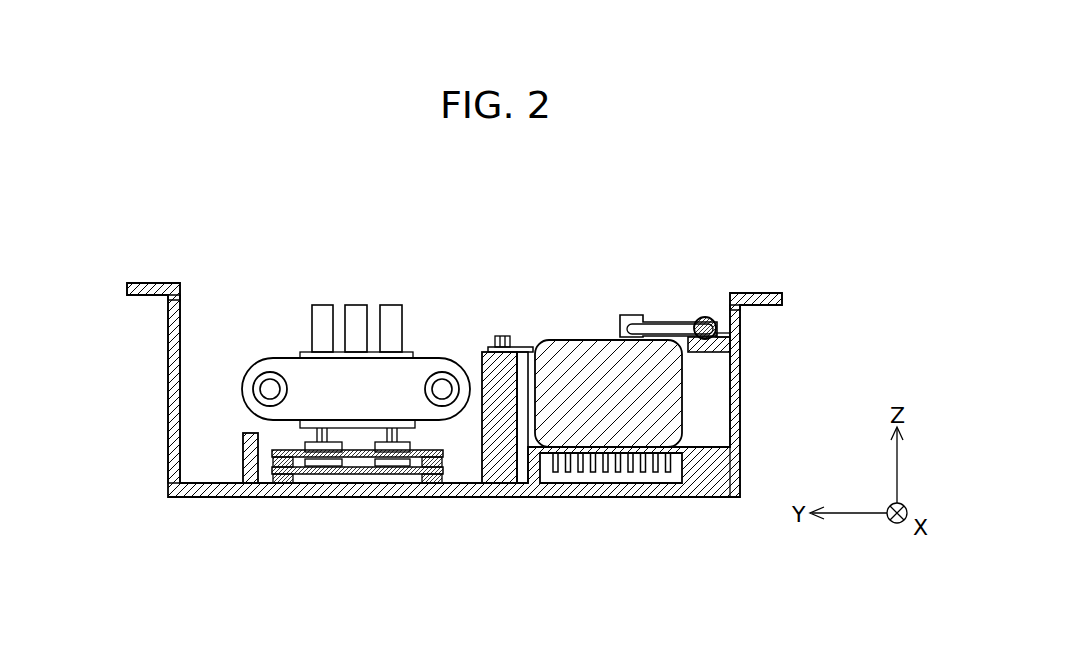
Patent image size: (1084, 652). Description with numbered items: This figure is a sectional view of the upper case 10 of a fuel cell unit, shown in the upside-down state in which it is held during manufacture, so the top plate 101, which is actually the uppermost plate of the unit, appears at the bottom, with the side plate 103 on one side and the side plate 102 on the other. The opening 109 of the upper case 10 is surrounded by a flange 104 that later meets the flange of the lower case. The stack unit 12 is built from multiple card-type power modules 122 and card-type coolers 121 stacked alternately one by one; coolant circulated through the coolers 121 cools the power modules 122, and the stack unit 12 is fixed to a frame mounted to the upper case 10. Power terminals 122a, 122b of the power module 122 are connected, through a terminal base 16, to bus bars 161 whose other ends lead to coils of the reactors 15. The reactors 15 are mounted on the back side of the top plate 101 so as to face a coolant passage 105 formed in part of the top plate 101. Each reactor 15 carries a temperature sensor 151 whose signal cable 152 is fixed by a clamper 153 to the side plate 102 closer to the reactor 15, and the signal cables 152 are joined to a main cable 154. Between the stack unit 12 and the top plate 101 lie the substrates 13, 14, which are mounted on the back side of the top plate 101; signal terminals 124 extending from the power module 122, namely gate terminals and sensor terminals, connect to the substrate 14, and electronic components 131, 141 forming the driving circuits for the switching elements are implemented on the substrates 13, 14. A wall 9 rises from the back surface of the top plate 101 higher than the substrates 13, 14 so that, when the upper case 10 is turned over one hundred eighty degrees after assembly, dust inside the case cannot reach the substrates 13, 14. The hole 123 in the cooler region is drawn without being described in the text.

The upper case 10 is at (122, 266).
The wall 9 is at (241, 433).
The stack unit 12 is at (296, 317).
The substrate 13 is at (482, 453).
The substrate 14 is at (480, 483).
The reactor 15 is at (570, 341).
The terminal base 16 is at (480, 351).
The top plate 101 is at (197, 478).
The side plate 102 is at (742, 394).
The side plate 103 is at (168, 345).
The flange 104 is at (768, 293).
The coolant passage 105 is at (670, 470).
The opening 109 is at (186, 298).
The cooler 121 is at (252, 365).
The power module 122 is at (327, 350).
The power terminal 122a is at (391, 304).
The power terminal 122b is at (360, 304).
The mounting hole 123 is at (264, 372).
The signal terminal 124 is at (407, 443).
The electronic component 131 is at (316, 467).
The electronic component 141 is at (317, 440).
The temperature sensor 151 is at (630, 314).
The signal cable 152 is at (670, 323).
The clamper 153 is at (718, 337).
The main cable 154 is at (707, 317).
The bus bar 161 is at (520, 347).